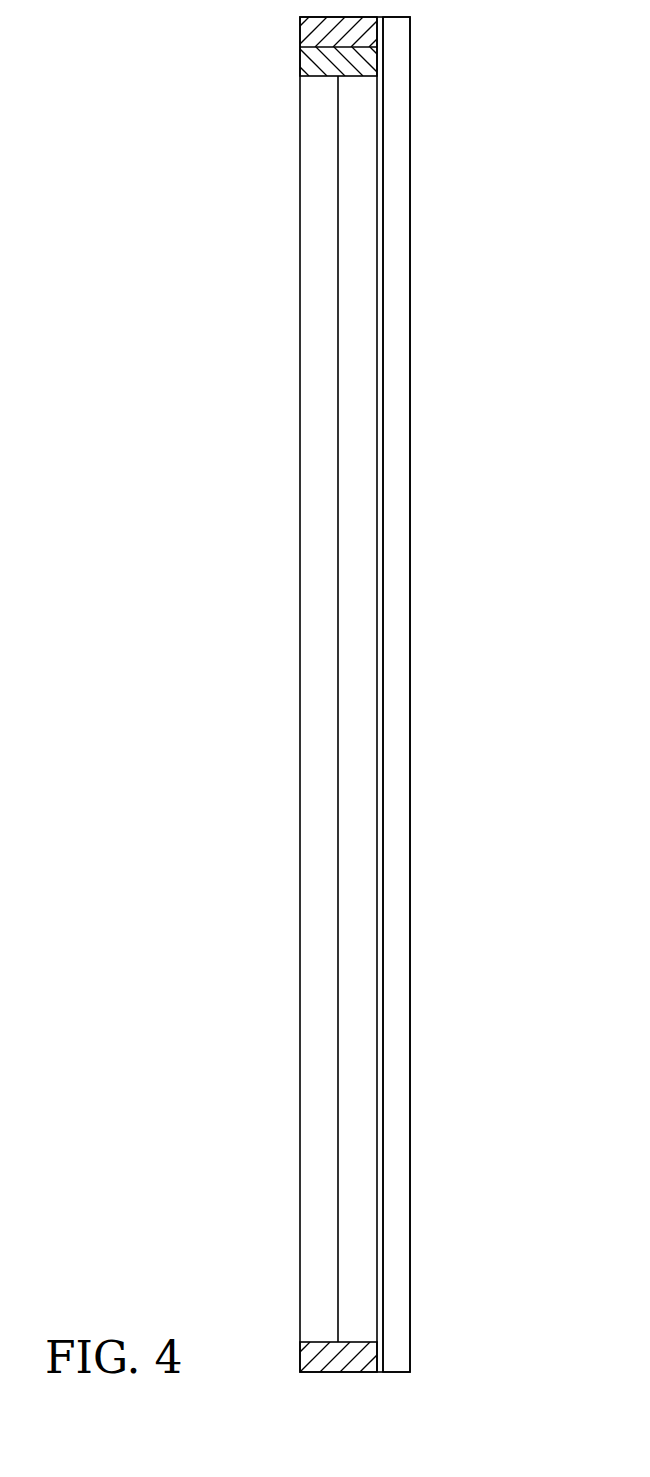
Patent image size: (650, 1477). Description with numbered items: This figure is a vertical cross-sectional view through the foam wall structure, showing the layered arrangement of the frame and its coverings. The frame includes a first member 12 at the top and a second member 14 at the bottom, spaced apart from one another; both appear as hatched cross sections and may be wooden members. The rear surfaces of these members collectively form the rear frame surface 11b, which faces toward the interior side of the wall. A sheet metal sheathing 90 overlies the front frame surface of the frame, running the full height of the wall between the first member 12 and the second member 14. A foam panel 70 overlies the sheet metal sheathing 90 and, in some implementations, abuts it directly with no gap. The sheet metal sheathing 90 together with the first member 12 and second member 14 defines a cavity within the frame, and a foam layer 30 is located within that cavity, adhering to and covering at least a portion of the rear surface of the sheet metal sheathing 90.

The rear frame surface 11b is at (232, 197).
The first member 12 is at (293, 13).
The second member 14 is at (303, 1360).
The foam layer 30 is at (340, 1037).
The foam panel 70 is at (410, 573).
The sheet metal sheathing 90 is at (383, 237).